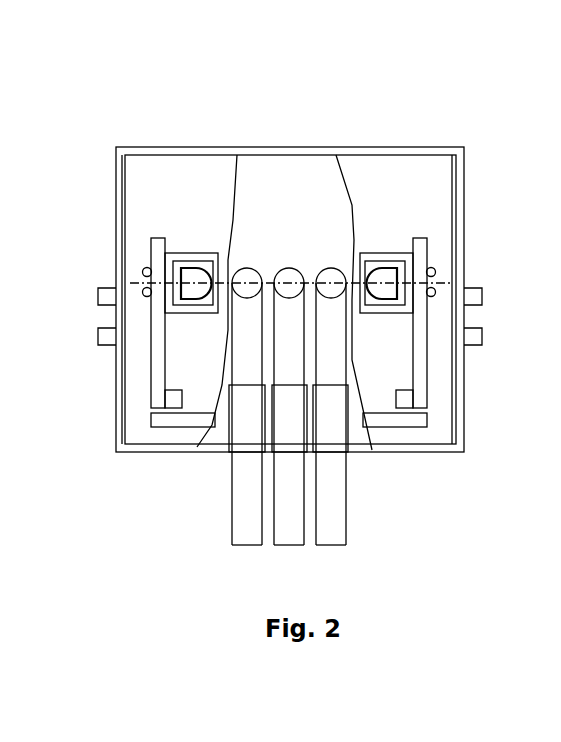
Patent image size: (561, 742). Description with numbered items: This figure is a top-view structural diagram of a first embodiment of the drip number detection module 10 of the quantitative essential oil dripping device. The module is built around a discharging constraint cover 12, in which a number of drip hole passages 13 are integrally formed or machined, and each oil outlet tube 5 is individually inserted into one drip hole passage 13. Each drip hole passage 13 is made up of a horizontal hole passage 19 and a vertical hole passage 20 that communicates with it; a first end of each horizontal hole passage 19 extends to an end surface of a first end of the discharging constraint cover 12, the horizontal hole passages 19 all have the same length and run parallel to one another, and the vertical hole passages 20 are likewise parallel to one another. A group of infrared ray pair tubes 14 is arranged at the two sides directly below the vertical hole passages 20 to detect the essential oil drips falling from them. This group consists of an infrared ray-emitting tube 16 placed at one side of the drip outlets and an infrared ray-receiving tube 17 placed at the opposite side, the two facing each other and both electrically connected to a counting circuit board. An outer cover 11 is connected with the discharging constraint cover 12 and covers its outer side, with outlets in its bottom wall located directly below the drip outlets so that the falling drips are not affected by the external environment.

The drip number detection module 10 is at (234, 128).
The outer cover 11 is at (437, 147).
The discharging constraint cover 12 is at (211, 453).
The drip hole passage 13 is at (333, 318).
The infrared ray pair tube 14 is at (178, 255).
The infrared ray-emitting tube 16 is at (197, 253).
The infrared ray-receiving tube 17 is at (375, 257).
The horizontal hole passage 19 is at (290, 326).
The vertical hole passage 20 is at (288, 278).
The oil outlet tube 5 is at (332, 492).